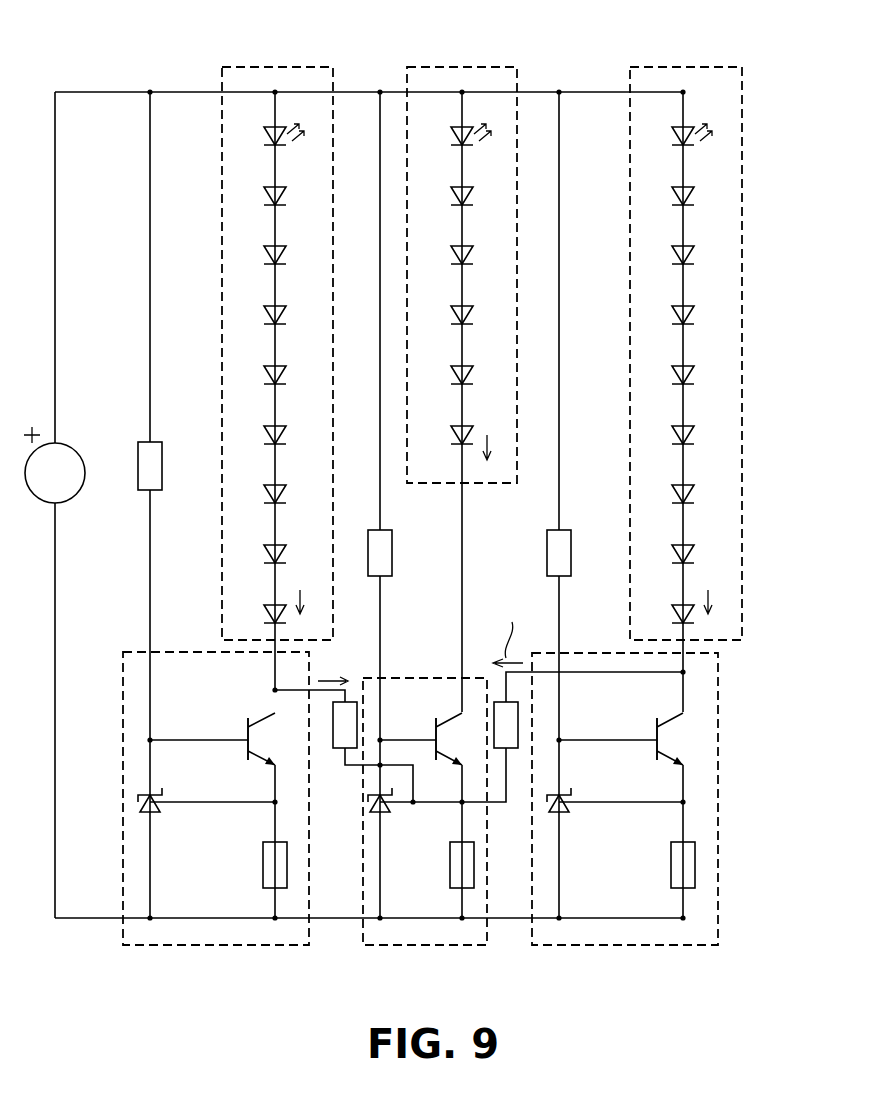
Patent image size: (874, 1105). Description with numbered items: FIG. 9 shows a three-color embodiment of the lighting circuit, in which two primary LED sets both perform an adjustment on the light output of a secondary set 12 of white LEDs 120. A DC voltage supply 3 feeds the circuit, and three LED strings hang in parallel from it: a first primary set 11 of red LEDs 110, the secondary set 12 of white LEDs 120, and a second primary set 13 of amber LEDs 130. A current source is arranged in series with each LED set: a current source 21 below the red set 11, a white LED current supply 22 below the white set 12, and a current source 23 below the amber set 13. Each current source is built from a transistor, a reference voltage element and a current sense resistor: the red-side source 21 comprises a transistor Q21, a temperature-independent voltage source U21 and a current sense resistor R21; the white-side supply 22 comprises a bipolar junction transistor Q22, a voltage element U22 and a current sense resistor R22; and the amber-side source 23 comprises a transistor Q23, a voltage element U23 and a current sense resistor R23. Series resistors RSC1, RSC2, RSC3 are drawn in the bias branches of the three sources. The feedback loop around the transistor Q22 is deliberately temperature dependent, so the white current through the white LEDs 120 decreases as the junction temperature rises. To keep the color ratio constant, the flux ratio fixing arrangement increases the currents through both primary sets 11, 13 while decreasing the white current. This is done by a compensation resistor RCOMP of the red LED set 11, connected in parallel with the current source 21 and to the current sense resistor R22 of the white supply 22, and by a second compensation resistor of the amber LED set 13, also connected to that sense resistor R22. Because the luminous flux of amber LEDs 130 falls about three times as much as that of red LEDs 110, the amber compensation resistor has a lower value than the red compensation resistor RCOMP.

The DC voltage supply 3 is at (68, 500).
The primary set of red LEDs 11 is at (247, 323).
The secondary set of white LEDs 12 is at (450, 245).
The primary set of amber LEDs 13 is at (668, 323).
The red LEDs 110 is at (268, 131).
The white LEDs 120 is at (455, 131).
The amber LEDs 130 is at (676, 131).
The current source 21 is at (268, 821).
The current source 22 is at (434, 834).
The current source 23 is at (592, 791).
The transistor Q21 is at (266, 718).
The bipolar junction transistor Q22 is at (453, 718).
The transistor Q23 is at (673, 718).
The temperature-independent voltage source U21 is at (160, 803).
The voltage source U22 is at (390, 803).
The voltage source U23 is at (569, 803).
The current sense resistor R21 is at (262, 865).
The current sense resistor R22 is at (449, 865).
The current sense resistor R23 is at (670, 865).
The sense resistor RSC1 is at (138, 462).
The sense resistor RSC2 is at (392, 552).
The sense resistor RSC3 is at (571, 552).
The compensation resistor RCOMP is at (333, 745).